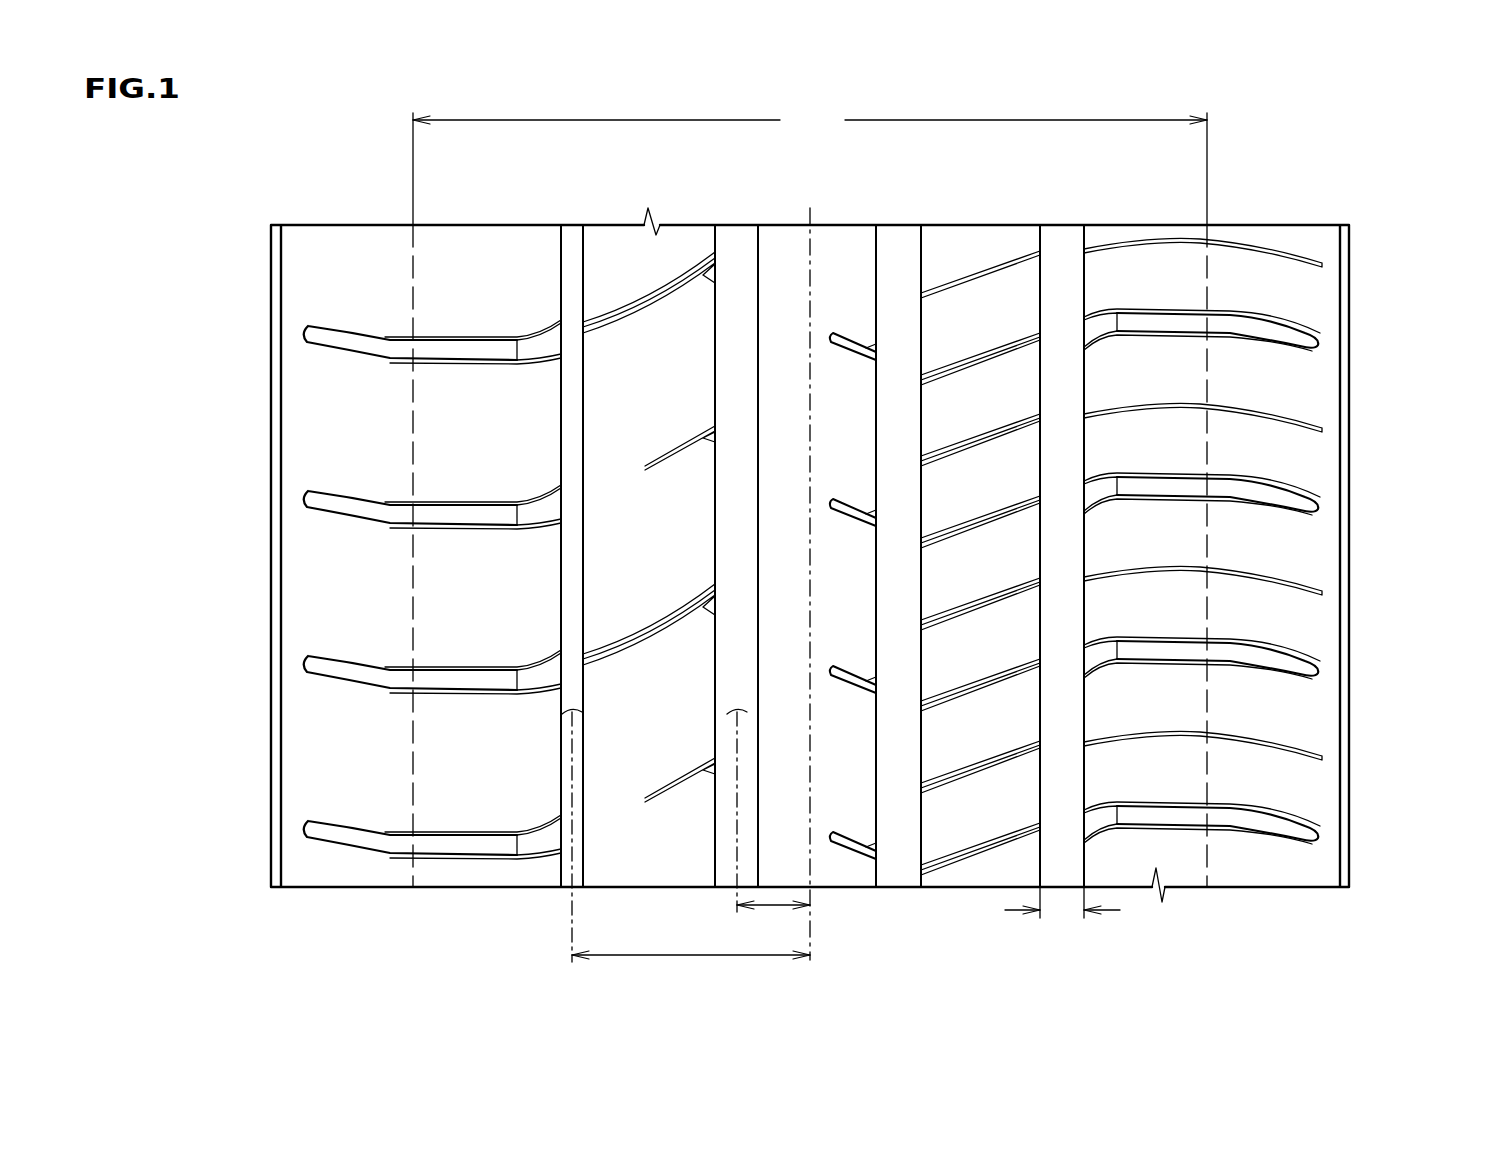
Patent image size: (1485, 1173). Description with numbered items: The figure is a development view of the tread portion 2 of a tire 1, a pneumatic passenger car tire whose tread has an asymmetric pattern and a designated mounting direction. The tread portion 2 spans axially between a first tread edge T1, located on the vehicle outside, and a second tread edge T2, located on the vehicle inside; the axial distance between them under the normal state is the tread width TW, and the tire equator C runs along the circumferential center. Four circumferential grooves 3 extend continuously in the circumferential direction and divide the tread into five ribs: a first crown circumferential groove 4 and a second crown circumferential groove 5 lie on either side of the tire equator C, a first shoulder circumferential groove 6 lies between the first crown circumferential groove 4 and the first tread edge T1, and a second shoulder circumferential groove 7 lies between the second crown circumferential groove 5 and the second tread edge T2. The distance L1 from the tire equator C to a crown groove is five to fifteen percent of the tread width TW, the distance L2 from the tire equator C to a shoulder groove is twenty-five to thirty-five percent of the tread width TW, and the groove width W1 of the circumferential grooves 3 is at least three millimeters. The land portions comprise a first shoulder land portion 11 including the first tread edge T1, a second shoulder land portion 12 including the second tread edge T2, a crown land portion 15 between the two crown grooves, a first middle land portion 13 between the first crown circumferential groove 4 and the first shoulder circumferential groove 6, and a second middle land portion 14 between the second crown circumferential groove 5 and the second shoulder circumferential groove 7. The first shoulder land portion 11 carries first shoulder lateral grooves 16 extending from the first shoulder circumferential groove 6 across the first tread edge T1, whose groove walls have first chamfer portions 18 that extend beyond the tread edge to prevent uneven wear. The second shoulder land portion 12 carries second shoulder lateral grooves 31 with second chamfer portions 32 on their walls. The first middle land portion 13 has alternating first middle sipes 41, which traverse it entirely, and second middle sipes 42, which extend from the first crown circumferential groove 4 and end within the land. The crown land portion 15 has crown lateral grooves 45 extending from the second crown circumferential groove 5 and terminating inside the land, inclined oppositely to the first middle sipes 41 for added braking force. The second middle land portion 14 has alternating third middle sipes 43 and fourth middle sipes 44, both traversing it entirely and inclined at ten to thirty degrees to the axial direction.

The tire 1 is at (1020, 220).
The tread portion 2 is at (687, 220).
The circumferential grooves 3 is at (1060, 395).
The first crown circumferential groove 4 is at (737, 272).
The second crown circumferential groove 5 is at (898, 272).
The first shoulder circumferential groove 6 is at (573, 272).
The second shoulder circumferential groove 7 is at (1062, 272).
The first shoulder land portion 11 is at (488, 272).
The second shoulder land portion 12 is at (1143, 272).
The first middle land portion 13 is at (630, 272).
The second middle land portion 14 is at (962, 252).
The crown land portion 15 is at (843, 272).
The first shoulder lateral grooves 16 is at (458, 355).
The first chamfer portions 18 is at (440, 527).
The second shoulder lateral grooves 31 is at (1173, 490).
The second chamfer portions 32 is at (1197, 500).
The first middle sipes 41 is at (655, 627).
The second middle sipes 42 is at (677, 785).
The third middle sipes 43 is at (970, 858).
The fourth middle sipes 44 is at (988, 762).
The crown lateral grooves 45 is at (853, 850).
The tread width TW is at (810, 120).
The first tread edge T1 is at (412, 254).
The second tread edge T2 is at (1210, 273).
The tire equator C is at (809, 569).
The distance L1 is at (773, 922).
The distance L2 is at (691, 973).
The groove width W1 is at (1062, 916).